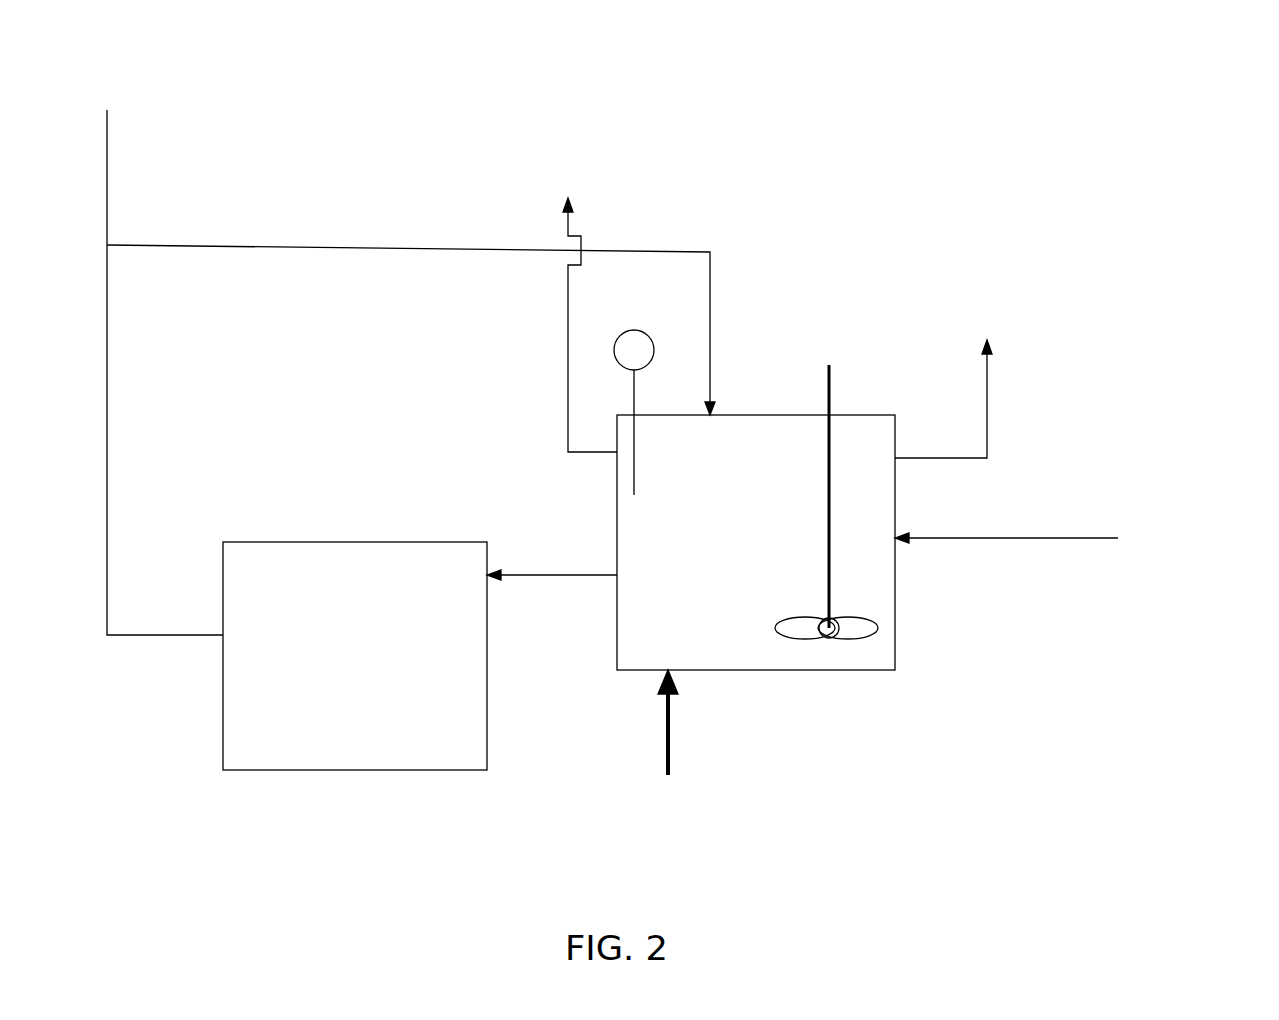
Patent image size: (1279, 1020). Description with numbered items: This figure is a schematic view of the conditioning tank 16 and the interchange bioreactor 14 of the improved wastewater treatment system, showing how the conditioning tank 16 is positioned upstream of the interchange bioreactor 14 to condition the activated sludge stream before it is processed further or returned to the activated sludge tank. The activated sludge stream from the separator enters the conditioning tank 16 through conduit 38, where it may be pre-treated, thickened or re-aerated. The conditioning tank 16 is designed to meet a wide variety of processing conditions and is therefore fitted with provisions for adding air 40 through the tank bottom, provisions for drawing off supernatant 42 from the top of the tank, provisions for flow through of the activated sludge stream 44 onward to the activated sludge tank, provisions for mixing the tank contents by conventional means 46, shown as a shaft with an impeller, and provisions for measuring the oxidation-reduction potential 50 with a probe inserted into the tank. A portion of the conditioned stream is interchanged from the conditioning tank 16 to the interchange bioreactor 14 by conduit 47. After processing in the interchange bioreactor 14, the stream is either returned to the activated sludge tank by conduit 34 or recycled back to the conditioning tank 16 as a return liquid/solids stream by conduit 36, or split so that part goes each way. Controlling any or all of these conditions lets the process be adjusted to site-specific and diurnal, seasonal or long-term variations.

The interchange bioreactor 14 is at (370, 541).
The conditioning tank 16 is at (745, 413).
The conduit 34 is at (95, 177).
The conduit 36 is at (361, 266).
The conduit 38 is at (1080, 553).
The provisions for adding air 40 is at (655, 732).
The provisions for drawing off supernatant 42 is at (975, 402).
The provisions for flow through of the AS stream 44 is at (555, 293).
The provisions for mixing of the tank contents 46 is at (815, 390).
The conduit 47 is at (555, 590).
The provisions for measuring the ORP 50 is at (648, 393).